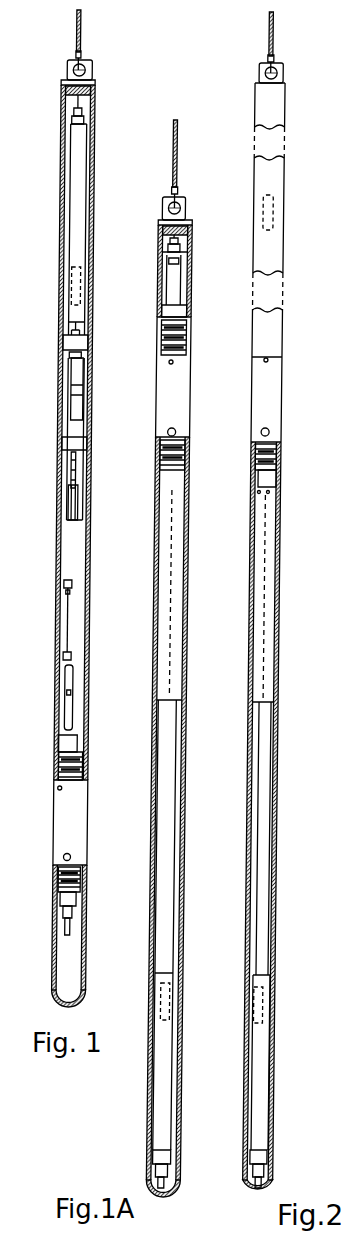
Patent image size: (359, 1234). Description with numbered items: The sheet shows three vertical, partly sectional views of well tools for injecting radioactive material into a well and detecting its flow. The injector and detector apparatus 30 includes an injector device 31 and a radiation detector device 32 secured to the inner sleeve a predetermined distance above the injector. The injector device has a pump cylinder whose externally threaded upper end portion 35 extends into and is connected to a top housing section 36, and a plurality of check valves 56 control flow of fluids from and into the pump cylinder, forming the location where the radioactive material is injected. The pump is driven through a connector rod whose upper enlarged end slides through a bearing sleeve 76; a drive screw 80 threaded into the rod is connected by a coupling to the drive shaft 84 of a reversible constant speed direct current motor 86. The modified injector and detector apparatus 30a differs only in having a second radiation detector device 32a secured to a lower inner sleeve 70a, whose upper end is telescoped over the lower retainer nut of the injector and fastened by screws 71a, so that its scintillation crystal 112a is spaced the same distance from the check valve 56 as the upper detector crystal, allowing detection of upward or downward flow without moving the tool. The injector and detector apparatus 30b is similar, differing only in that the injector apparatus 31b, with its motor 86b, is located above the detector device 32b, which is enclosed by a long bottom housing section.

In FIG. 1, the injector and detector apparatus 30 is at (105, 74).
In FIG. 1, the radiation detector device 32 is at (85, 217).
In FIG. 2, the radiation detector device 32 is at (276, 230).
In FIG. 1, the top housing section 36 is at (93, 290).
In FIG. 1, the reversible constant speed direct current motor 86 is at (82, 397).
In FIG. 1, the drive shaft 84 is at (80, 427).
In FIG. 1, the drive screw 80 is at (81, 476).
In FIG. 1, the bearing sleeve 76 is at (78, 503).
In FIG. 1, the externally threaded upper end portion 35 is at (58, 760).
In FIG. 1, the injector device 31 is at (83, 781).
In FIG. 2, the injector device 31 is at (268, 627).
In FIG. 1, the check valves 56 is at (64, 857).
In FIG. 1A, the check valves 56 is at (176, 433).
In FIG. 2, the check valves 56 is at (270, 432).
In FIG. 1A, the direct current motor 86b is at (179, 291).
In FIG. 1A, the injector apparatus 31b is at (182, 403).
In FIG. 1A, the injector and detector apparatus 30b is at (194, 612).
In FIG. 1A, the detector device 32b is at (168, 1072).
In FIG. 2, the injector and detector apparatus 30a is at (301, 386).
In FIG. 2, the screws 71a is at (266, 494).
In FIG. 2, the lower inner sleeve 70a is at (269, 853).
In FIG. 2, the scintillation crystal 112a is at (244, 1005).
In FIG. 2, the second radiation detector device 32a is at (260, 1068).